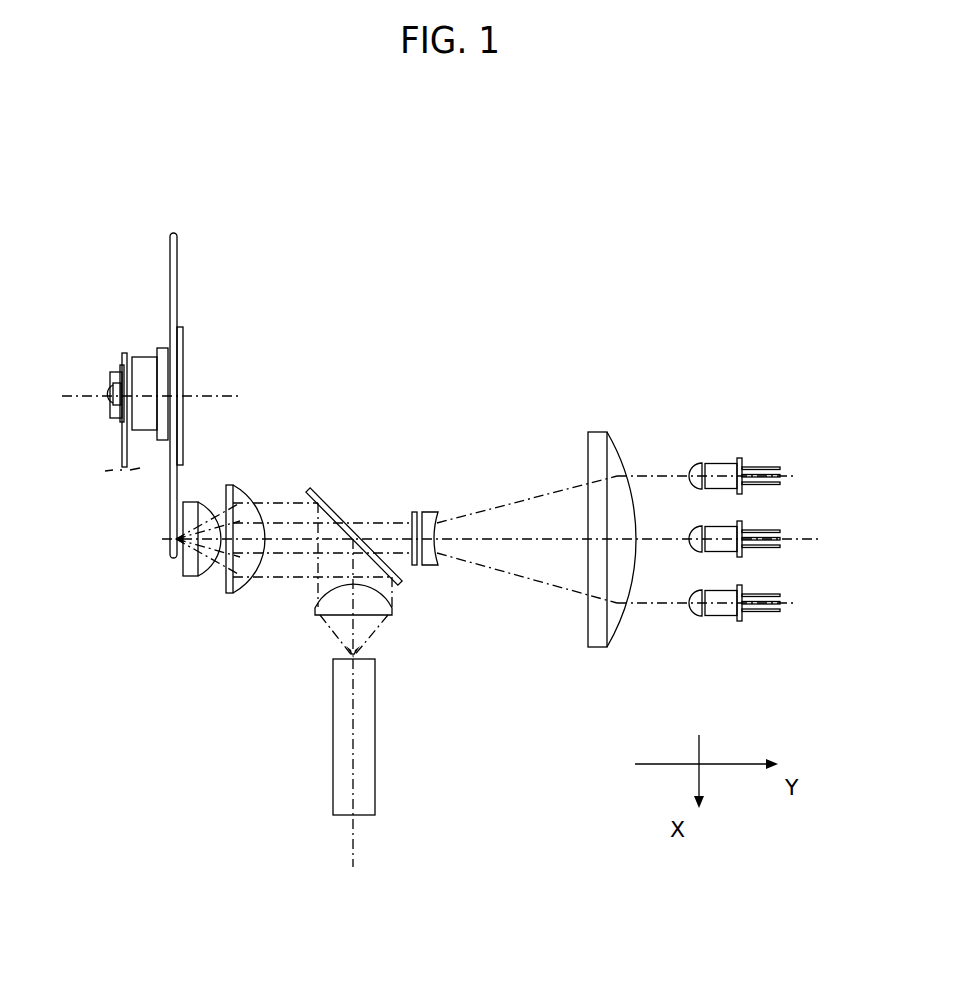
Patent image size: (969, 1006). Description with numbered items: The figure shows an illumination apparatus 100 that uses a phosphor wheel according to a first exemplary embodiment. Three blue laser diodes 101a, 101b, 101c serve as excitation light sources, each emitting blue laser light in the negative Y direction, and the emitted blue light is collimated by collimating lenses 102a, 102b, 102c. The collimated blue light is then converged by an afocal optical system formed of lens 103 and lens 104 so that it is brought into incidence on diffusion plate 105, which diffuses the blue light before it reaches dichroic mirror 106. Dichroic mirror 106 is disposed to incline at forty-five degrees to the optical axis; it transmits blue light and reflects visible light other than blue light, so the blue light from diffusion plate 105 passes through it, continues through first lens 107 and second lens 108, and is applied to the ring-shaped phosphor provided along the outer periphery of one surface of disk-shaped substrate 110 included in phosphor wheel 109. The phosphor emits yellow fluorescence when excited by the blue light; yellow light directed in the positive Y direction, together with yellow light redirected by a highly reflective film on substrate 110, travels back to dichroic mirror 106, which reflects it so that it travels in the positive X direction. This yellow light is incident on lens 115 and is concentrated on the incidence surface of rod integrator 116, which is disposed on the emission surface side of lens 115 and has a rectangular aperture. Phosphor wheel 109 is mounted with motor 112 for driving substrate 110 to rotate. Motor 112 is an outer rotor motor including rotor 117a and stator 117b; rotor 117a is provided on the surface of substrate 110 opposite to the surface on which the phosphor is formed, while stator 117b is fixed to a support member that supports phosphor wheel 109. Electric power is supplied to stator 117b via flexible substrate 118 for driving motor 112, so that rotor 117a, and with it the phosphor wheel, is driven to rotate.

The illumination apparatus 100 is at (593, 303).
The blue laser diode 101a is at (742, 456).
The blue laser diode 101b is at (742, 553).
The blue laser diode 101c is at (742, 620).
The collimating lens 102a is at (690, 462).
The collimating lens 102b is at (690, 553).
The collimating lens 102c is at (695, 618).
The lens 103 is at (600, 432).
The lens 104 is at (437, 512).
The diffusion plate 105 is at (412, 512).
The dichroic mirror 106 is at (335, 508).
The first lens 107 is at (228, 594).
The second lens 108 is at (190, 578).
The phosphor wheel 109 is at (195, 261).
The substrate 110 is at (175, 318).
The motor 112 is at (108, 393).
The lens 115 is at (320, 617).
The rod integrator 116 is at (333, 763).
The rotor 117a is at (162, 348).
The stator 117b is at (140, 357).
The flexible substrate 118 is at (120, 462).